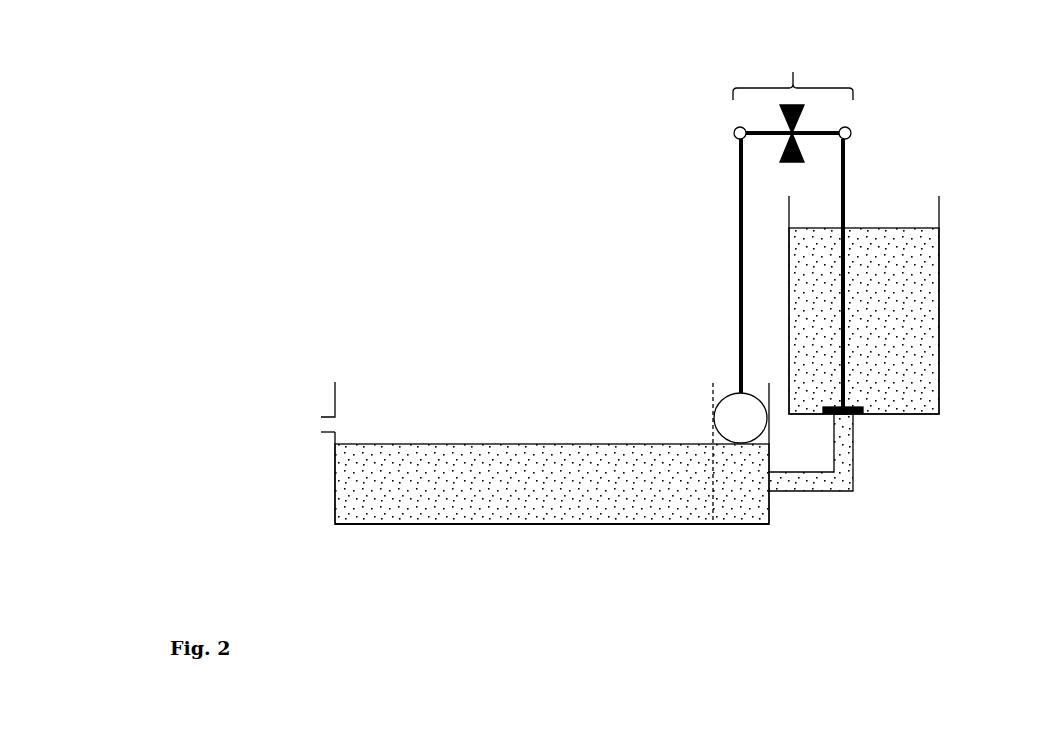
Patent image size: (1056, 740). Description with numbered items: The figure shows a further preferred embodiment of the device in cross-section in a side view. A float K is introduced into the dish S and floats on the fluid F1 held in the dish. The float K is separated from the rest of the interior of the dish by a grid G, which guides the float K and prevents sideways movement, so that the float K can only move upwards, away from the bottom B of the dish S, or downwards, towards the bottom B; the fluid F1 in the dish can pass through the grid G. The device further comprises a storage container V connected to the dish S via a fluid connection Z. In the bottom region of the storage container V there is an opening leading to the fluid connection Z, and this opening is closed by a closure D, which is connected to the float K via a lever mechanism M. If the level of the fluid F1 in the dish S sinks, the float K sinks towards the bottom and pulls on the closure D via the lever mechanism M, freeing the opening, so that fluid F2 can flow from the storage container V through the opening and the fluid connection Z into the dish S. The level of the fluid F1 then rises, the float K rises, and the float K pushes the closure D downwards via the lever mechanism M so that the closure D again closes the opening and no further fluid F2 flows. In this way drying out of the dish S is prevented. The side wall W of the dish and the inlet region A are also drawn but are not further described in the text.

The lever mechanism M is at (793, 98).
The dish S is at (330, 387).
The opening A is at (318, 425).
The wall of first vessel W is at (330, 481).
The bottom of dish B is at (375, 525).
The fluid F1 is at (600, 497).
The grid G is at (709, 436).
The float K is at (721, 398).
The fluid connection Z is at (811, 479).
The closure D is at (862, 417).
The storage container V is at (942, 291).
The fluid F2 is at (922, 366).